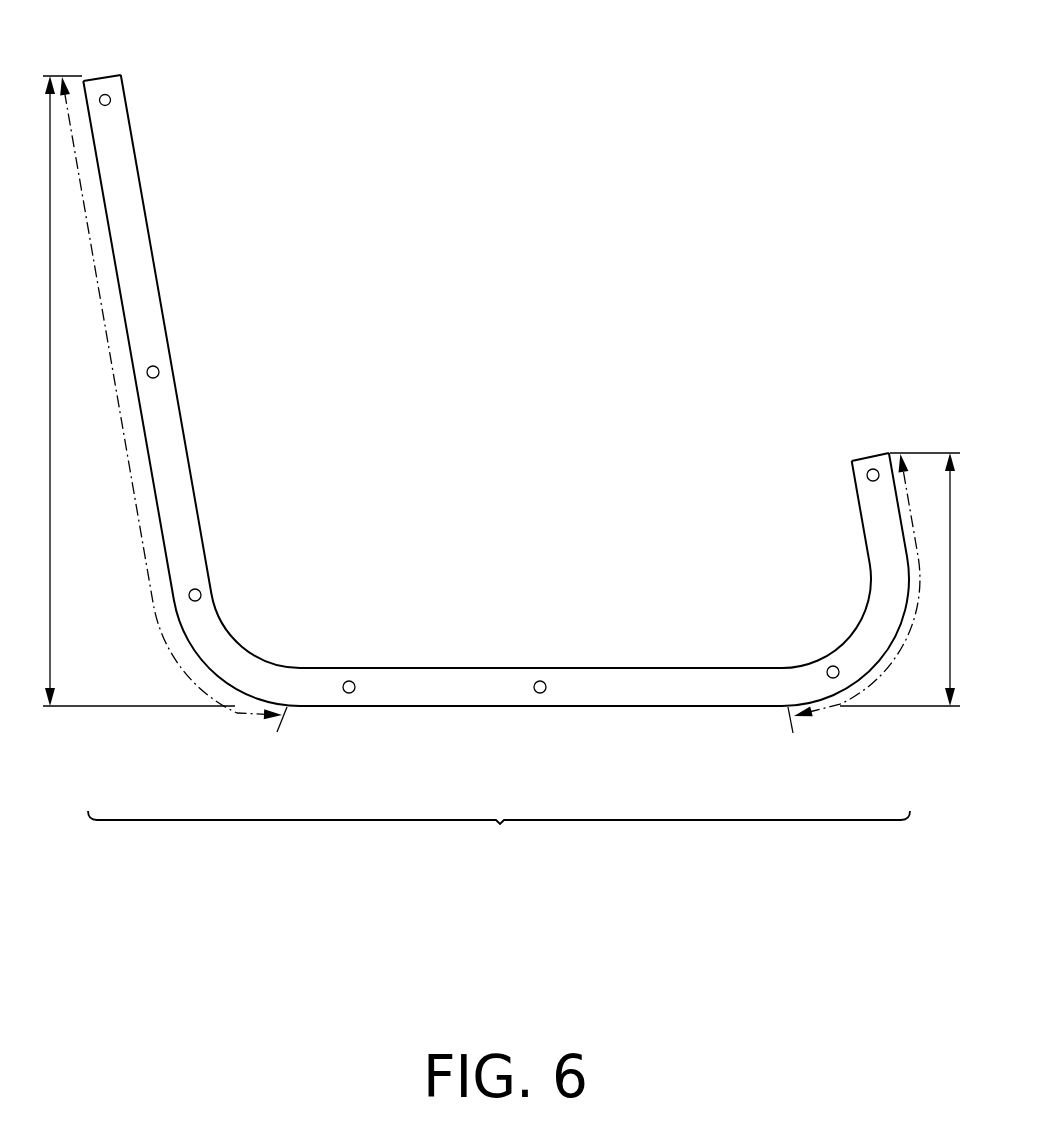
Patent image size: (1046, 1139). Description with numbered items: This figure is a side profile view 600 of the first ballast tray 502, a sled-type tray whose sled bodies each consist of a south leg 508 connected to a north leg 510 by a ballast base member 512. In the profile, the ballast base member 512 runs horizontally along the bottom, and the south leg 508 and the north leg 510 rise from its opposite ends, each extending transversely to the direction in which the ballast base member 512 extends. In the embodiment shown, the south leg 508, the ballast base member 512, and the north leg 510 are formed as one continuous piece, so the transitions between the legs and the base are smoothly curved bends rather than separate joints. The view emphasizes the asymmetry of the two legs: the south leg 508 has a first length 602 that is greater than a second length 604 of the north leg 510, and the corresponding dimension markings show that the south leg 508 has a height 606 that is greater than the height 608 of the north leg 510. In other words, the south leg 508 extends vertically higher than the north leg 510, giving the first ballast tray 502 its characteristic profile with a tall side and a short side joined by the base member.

The first ballast tray 502 is at (541, 60).
The south leg 508 is at (118, 75).
The north leg 510 is at (850, 461).
The ballast base member 512 is at (547, 667).
The side profile view 600 is at (499, 833).
The first length 602 is at (204, 692).
The second length 604 is at (853, 692).
The height 606 is at (50, 650).
The height 608 is at (950, 668).